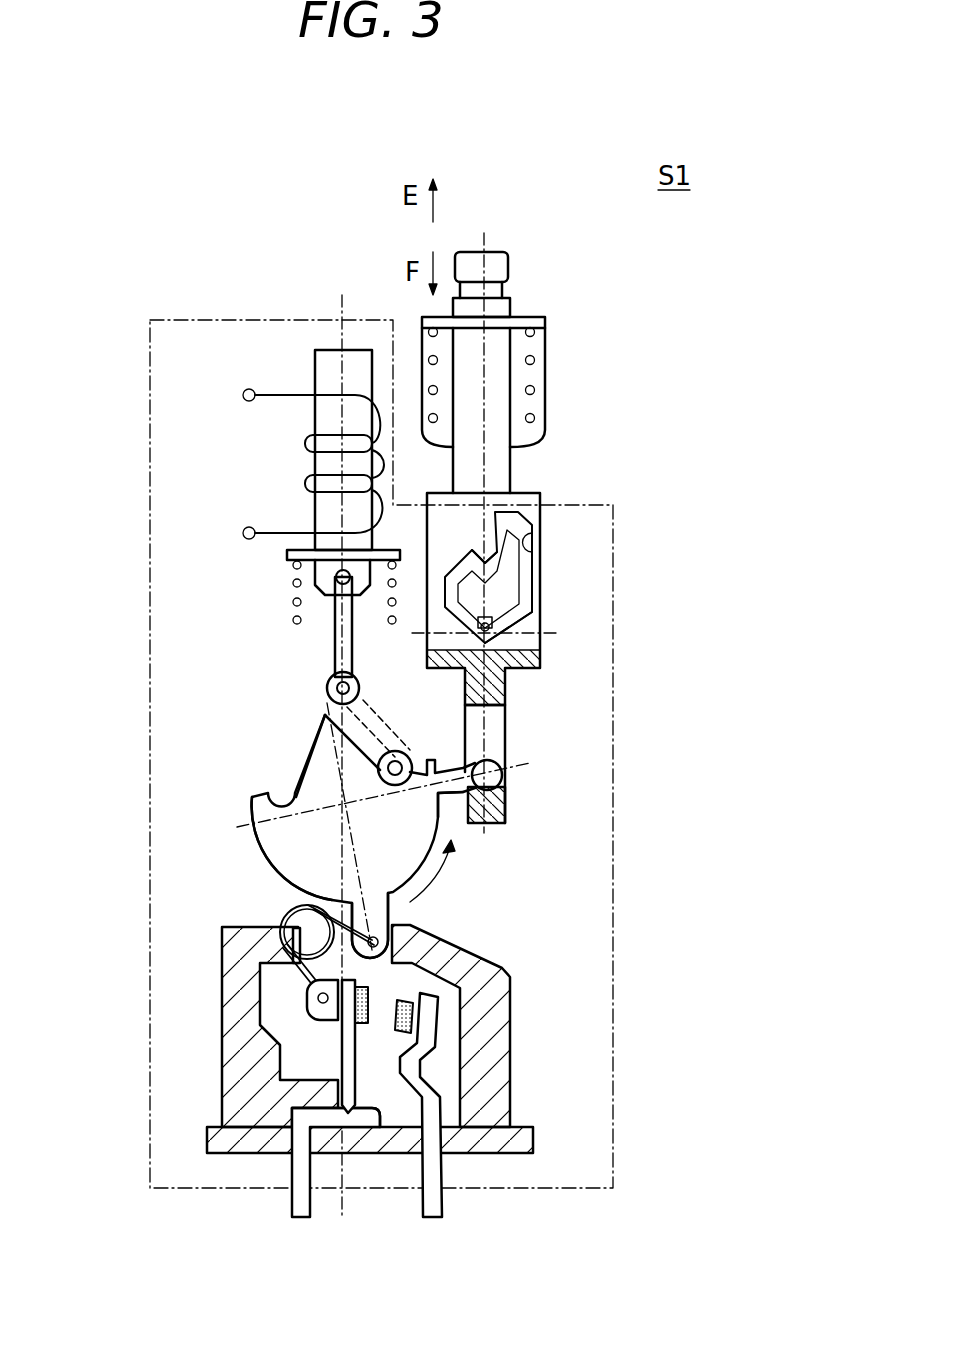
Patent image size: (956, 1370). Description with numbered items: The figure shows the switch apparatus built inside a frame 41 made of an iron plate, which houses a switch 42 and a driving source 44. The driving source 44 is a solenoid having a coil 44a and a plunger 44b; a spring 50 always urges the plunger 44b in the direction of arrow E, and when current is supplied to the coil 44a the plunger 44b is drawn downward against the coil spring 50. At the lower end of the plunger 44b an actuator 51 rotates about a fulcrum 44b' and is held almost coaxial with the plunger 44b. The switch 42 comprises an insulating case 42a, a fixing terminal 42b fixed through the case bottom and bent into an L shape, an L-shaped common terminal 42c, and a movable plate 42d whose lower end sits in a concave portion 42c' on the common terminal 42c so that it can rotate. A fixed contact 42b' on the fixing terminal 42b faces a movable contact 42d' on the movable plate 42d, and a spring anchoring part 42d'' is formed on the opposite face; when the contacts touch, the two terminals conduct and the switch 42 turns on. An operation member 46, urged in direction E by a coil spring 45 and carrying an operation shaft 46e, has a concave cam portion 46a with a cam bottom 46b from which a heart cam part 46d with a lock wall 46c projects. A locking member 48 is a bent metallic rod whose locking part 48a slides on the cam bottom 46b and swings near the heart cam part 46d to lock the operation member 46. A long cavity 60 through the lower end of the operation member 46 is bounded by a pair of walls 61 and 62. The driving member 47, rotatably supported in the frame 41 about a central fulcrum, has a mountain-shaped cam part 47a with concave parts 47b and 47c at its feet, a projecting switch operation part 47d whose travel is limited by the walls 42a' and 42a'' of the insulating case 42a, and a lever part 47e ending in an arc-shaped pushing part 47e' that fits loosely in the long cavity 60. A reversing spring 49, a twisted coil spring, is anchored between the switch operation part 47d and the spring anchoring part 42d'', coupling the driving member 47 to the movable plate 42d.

The frame 41 is at (614, 866).
The switch 42 is at (384, 1104).
The insulating case 42a is at (300, 1040).
The wall 42a' is at (182, 937).
The wall 42a'' is at (496, 1026).
The fixing terminal 42b is at (435, 1146).
The fixed contact 42b' is at (500, 1052).
The common terminal 42c is at (314, 1205).
The concave portion 42c' is at (336, 1186).
The movable plate 42d is at (371, 1135).
The movable contact 42d' is at (476, 1022).
The spring anchoring part 42d'' is at (201, 1011).
The driving source 44 is at (248, 416).
The coil 44a is at (307, 482).
The plunger 44b is at (338, 393).
The fulcrum 44b' is at (289, 572).
The coil spring 45 is at (535, 389).
The operation member 46 is at (565, 478).
The concave cam portion 46a is at (533, 532).
The cam bottom 46b is at (525, 585).
The lock wall 46c is at (480, 570).
The heart cam part 46d is at (505, 598).
The operation shaft 46e is at (497, 267).
The driving member 47 is at (317, 817).
The cam part 47a is at (313, 767).
The concave part 47b is at (268, 855).
The concave part 47c is at (412, 760).
The switch operation part 47d is at (392, 905).
The lever part 47e is at (482, 844).
The pushing part 47e' is at (540, 778).
The locking member 48 is at (492, 620).
The locking part 48a is at (495, 628).
The reversing spring 49 is at (282, 950).
The spring 50 is at (293, 620).
The actuator 51 is at (340, 657).
The long cavity 60 is at (492, 733).
The wall 61 is at (463, 713).
The wall 62 is at (508, 787).